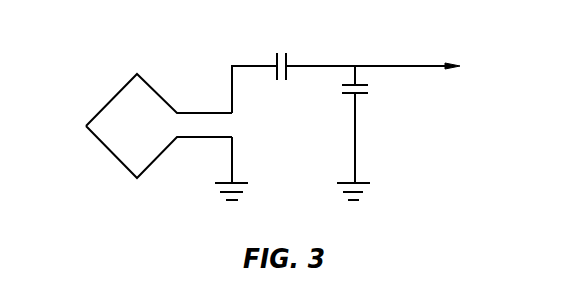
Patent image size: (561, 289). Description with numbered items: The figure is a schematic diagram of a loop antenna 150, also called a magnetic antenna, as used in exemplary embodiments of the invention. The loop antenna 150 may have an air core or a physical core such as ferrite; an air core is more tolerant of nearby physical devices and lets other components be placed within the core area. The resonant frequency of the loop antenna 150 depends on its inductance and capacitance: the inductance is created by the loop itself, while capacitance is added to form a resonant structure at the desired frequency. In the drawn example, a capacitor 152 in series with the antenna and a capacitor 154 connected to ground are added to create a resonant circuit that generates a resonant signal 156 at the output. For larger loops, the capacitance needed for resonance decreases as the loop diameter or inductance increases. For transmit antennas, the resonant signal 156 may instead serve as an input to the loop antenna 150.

The loop antenna 150 is at (112, 101).
The capacitor 152 is at (289, 62).
The capacitor 154 is at (365, 96).
The resonant signal 156 is at (387, 66).